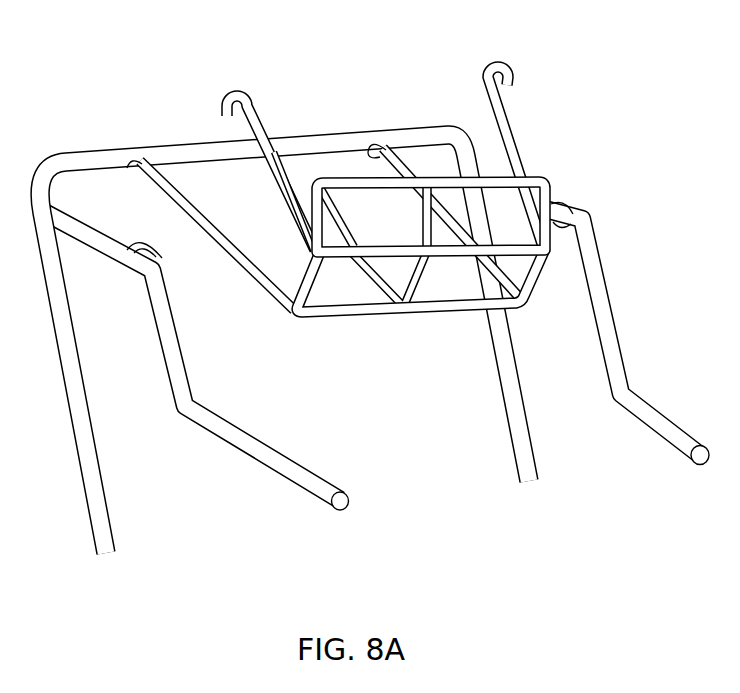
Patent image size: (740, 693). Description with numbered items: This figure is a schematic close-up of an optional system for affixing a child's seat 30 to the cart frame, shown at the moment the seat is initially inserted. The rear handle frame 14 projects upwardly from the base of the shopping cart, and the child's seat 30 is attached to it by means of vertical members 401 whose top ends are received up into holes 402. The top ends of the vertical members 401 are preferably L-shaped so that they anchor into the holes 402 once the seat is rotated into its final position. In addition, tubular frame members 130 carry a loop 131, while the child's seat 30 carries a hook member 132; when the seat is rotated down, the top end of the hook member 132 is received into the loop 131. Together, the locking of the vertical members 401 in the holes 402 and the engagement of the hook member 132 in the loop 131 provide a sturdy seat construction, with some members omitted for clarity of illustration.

The rear handle frame 14 is at (85, 467).
The child's seat 30 is at (367, 293).
The tubular frame members 130 is at (104, 258).
The loop 131 is at (147, 244).
The hook member 132 is at (231, 92).
The vertical members 401 is at (188, 207).
The holes 402 is at (135, 182).